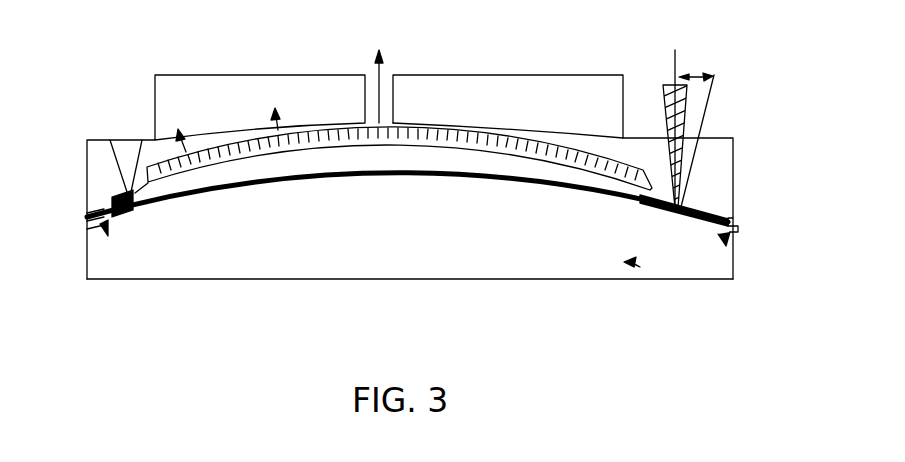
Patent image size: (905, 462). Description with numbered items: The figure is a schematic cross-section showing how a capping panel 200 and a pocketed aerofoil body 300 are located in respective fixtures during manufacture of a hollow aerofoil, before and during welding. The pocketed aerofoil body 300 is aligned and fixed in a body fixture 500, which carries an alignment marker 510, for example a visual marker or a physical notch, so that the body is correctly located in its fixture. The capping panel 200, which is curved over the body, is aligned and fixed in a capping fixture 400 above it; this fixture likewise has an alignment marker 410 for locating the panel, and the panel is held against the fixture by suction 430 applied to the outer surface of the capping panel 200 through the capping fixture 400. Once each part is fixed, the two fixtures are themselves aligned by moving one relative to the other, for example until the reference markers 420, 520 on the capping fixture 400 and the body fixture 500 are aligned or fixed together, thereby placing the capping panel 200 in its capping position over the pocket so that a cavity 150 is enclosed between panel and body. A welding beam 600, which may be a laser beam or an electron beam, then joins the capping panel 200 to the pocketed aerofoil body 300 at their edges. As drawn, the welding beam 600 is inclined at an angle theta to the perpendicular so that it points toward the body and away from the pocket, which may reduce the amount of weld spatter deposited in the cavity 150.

The cavity 150 is at (343, 170).
The capping panel 200 is at (212, 152).
The pocketed aerofoil body 300 is at (168, 203).
The capping fixture 400 is at (613, 100).
The alignment marker 410 is at (113, 200).
The reference marker 420 is at (735, 218).
The suction 430 is at (385, 62).
The body fixture 500 is at (640, 267).
The alignment marker 510 is at (100, 228).
The reference marker 520 is at (738, 230).
The welding beam 600 is at (695, 120).